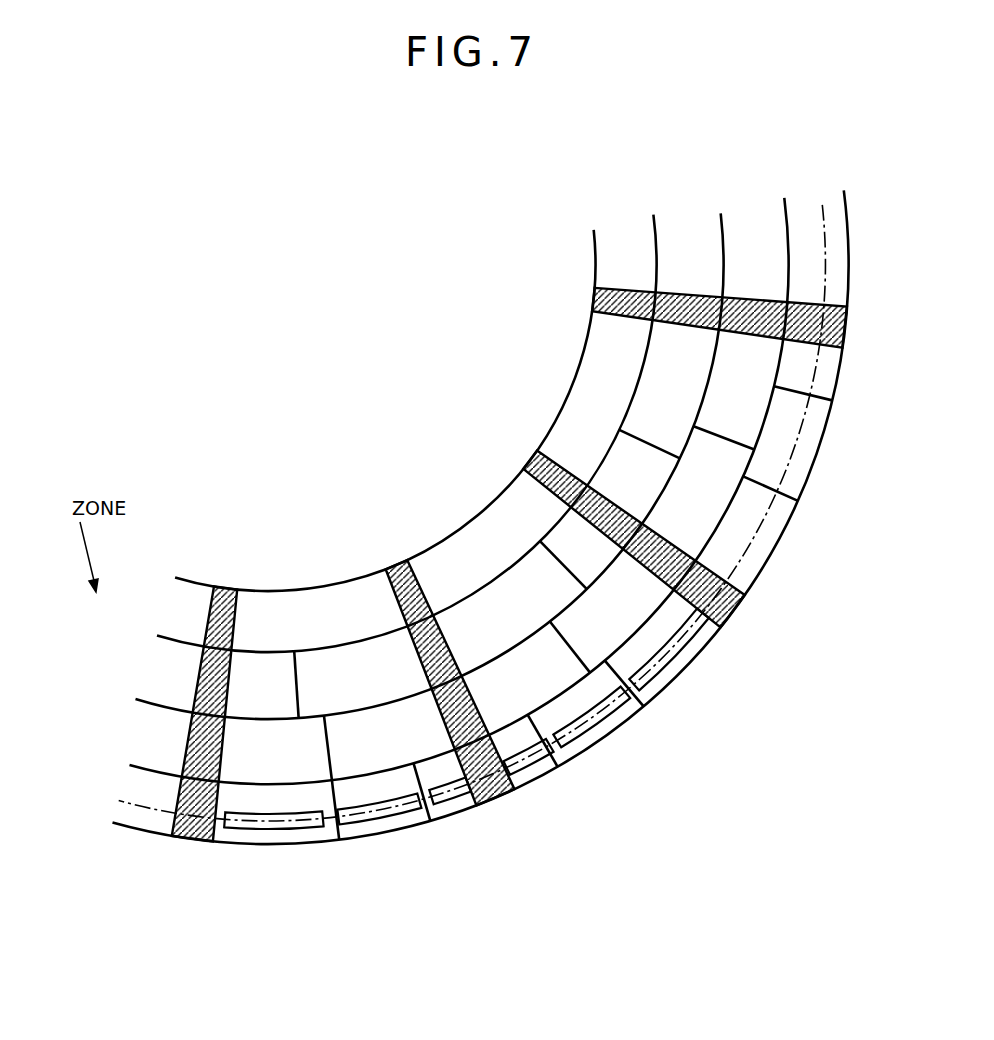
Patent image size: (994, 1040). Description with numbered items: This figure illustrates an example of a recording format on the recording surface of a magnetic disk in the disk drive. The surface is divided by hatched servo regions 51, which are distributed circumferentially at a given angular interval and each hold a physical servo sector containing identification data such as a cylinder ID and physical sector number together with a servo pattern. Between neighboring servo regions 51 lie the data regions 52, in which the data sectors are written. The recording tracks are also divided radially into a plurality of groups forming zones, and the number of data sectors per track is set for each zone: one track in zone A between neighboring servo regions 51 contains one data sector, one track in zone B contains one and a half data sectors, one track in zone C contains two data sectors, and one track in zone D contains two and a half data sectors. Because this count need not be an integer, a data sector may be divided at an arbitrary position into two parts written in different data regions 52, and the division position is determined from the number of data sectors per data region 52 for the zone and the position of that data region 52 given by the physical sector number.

The servo region 51 is at (872, 352).
The data region 52 is at (473, 817).
The zone A is at (166, 577).
The zone B is at (148, 640).
The zone C is at (134, 701).
The zone D is at (112, 764).